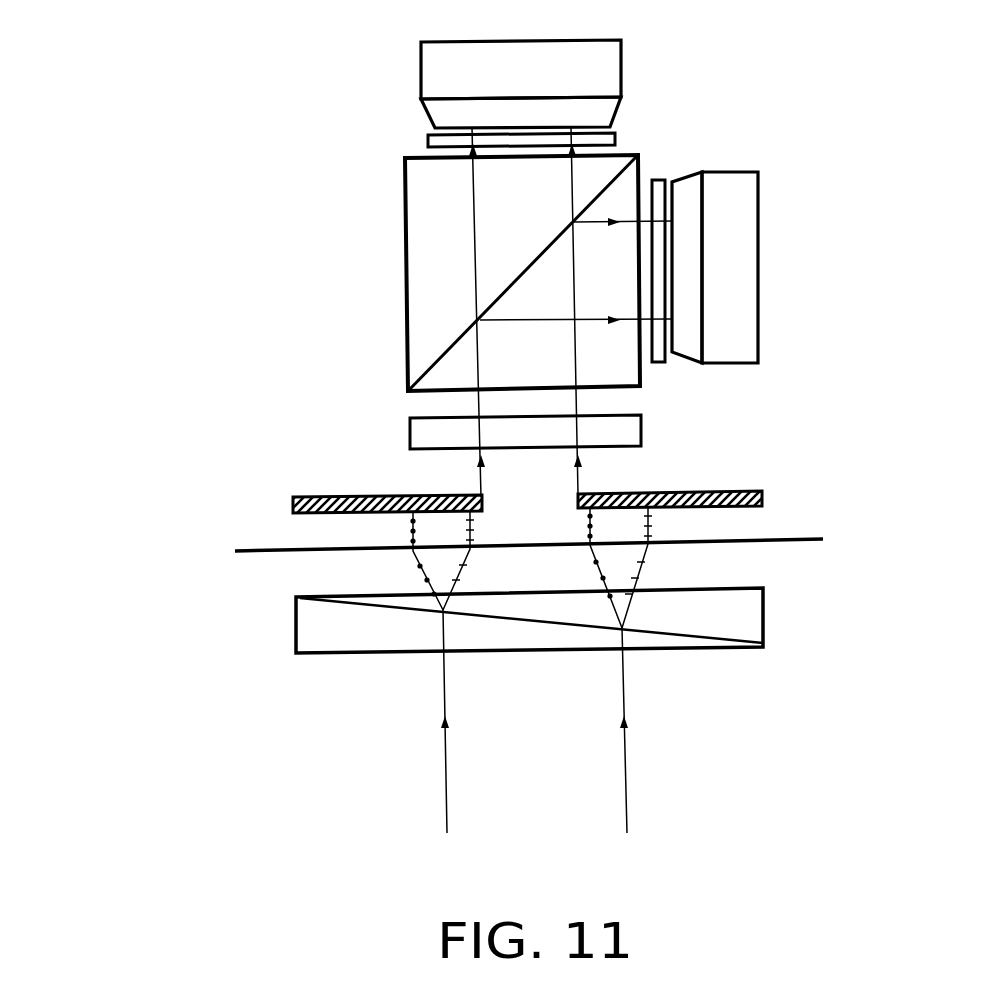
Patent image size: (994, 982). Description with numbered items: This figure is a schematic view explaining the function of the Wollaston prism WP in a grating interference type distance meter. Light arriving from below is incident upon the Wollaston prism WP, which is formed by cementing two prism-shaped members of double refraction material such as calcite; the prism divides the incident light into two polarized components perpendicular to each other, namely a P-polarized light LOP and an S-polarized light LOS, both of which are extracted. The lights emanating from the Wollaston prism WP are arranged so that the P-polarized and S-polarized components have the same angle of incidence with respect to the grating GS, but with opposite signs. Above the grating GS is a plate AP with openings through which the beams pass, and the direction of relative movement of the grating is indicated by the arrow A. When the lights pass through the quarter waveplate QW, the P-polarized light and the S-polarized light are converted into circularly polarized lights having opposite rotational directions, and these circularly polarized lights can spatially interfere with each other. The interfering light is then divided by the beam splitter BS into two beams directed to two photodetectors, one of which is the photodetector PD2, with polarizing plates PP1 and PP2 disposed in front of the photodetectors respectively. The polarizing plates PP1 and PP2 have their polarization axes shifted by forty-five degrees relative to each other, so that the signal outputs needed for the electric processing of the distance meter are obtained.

The photodetector PD2 is at (622, 60).
The polarizing plate PP1 is at (617, 137).
The polarizing plate PP2 is at (658, 180).
The beam splitter BS is at (415, 262).
The quarter waveplate QW is at (643, 432).
The aperture plate AP is at (748, 490).
The grating GS is at (774, 539).
The Wollaston prism WP is at (755, 622).
The S-polarized light LOS is at (408, 560).
The P-polarized light LOP is at (652, 559).
The direction of relative movement of grating A is at (192, 551).